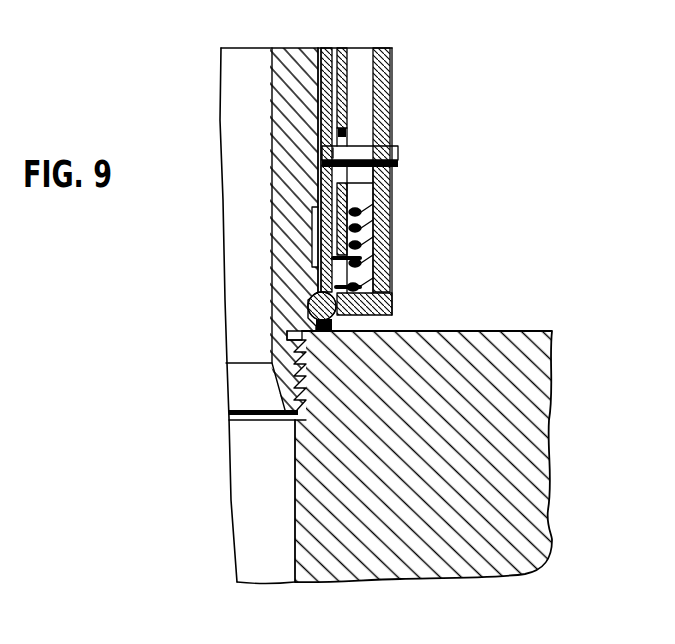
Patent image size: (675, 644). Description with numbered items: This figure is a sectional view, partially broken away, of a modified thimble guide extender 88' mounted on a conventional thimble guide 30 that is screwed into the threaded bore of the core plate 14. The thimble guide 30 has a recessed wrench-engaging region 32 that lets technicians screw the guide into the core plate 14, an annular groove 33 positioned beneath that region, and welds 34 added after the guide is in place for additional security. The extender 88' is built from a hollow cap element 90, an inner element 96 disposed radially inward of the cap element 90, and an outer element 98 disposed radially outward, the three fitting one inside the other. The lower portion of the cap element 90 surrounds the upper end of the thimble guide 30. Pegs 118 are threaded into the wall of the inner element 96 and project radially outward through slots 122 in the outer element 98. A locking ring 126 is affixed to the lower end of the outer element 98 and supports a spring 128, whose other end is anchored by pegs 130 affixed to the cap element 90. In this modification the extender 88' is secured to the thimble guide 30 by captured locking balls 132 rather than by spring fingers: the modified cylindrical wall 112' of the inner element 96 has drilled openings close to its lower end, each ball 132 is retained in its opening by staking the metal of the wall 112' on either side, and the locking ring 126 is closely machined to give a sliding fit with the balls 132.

The core plate 14 is at (505, 418).
The thimble guide 30 is at (280, 160).
The recessed wrench-engaging region 32 is at (313, 240).
The annular groove 33 is at (285, 316).
The welds 34 is at (333, 325).
The modified extender 88' is at (471, 181).
The hollow cap element 90 is at (343, 50).
The inner element 96 is at (329, 50).
The outer element 98 is at (385, 88).
The modified cylindrical wall 112' is at (254, 170).
The pegs 118 is at (397, 156).
The slots 122 is at (387, 178).
The locking ring 126 is at (392, 293).
The spring 128 is at (363, 238).
The pegs 130 is at (350, 207).
The locking balls 132 is at (307, 300).